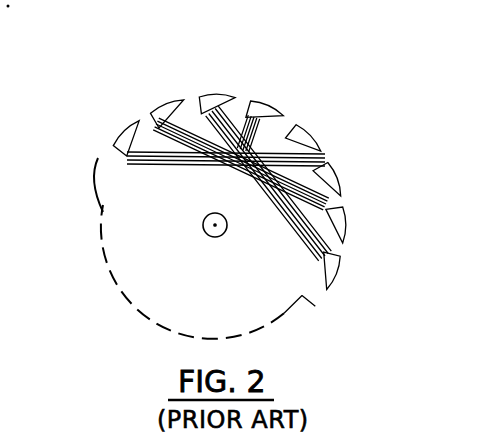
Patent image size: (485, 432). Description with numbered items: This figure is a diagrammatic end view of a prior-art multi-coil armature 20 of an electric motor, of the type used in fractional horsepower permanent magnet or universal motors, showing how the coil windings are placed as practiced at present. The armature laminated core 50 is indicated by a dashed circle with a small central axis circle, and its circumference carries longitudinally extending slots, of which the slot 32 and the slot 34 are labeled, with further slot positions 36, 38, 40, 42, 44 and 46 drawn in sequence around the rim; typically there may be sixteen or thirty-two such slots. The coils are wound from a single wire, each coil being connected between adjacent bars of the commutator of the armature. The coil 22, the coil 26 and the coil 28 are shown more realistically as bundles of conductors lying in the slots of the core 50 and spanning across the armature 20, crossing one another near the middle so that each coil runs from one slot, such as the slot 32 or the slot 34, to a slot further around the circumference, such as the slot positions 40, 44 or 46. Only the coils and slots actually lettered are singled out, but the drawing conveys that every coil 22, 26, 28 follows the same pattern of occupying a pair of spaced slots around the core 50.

The multi-coil armature 20 is at (215, 185).
The coil 22 is at (149, 176).
The coil 26 is at (217, 109).
The coil 28 is at (282, 231).
The slot 32 is at (108, 153).
The slot 34 is at (148, 116).
The stator tooth 36 is at (192, 108).
The stator tooth 38 is at (244, 100).
The stator tooth 40 is at (299, 117).
The stator tooth 42 is at (326, 165).
The stator tooth 44 is at (340, 212).
The stator tooth 46 is at (330, 268).
The armature laminated core 50 is at (137, 247).